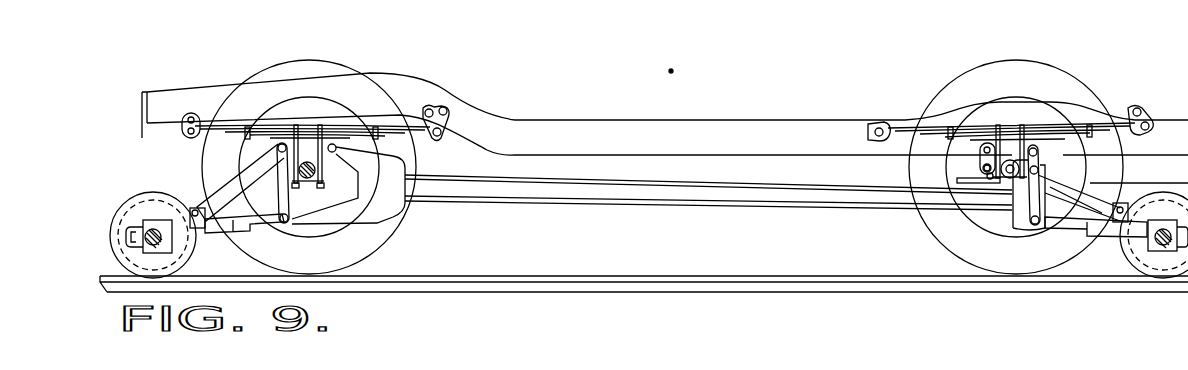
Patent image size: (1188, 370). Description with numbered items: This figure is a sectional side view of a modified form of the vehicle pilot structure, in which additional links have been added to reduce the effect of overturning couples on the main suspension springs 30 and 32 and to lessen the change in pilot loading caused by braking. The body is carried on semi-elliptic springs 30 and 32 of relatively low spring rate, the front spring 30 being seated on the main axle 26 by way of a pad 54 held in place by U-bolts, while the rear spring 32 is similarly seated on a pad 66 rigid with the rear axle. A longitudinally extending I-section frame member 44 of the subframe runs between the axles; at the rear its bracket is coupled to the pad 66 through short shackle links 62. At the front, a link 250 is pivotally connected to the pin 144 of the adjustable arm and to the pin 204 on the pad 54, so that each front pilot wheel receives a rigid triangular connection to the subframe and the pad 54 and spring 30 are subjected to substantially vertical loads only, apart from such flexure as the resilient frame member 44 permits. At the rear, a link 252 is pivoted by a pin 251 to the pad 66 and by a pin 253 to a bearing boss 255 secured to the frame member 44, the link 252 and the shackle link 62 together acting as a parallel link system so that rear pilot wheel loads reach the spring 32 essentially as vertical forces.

The pin 204 is at (200, 162).
The semi-elliptic spring 30 is at (272, 124).
The pad 54 is at (310, 162).
The main axle 26 is at (333, 142).
The pin 144 is at (303, 232).
The link 250 is at (276, 218).
The frame member 44 is at (540, 183).
The semi-elliptic spring 32 is at (980, 127).
The pad 66 is at (1007, 147).
The pin 251 is at (979, 150).
The link 252 is at (980, 164).
The pin 253 is at (988, 175).
The bearing boss 255 is at (987, 184).
The shackle link 62 is at (1065, 168).